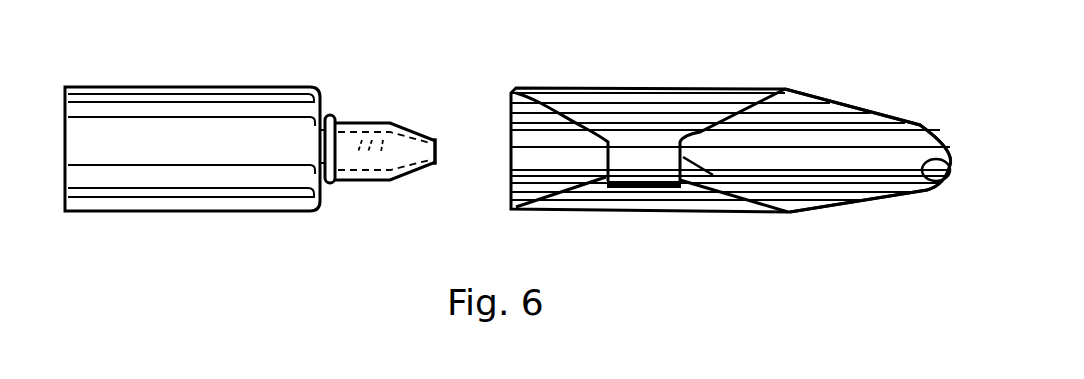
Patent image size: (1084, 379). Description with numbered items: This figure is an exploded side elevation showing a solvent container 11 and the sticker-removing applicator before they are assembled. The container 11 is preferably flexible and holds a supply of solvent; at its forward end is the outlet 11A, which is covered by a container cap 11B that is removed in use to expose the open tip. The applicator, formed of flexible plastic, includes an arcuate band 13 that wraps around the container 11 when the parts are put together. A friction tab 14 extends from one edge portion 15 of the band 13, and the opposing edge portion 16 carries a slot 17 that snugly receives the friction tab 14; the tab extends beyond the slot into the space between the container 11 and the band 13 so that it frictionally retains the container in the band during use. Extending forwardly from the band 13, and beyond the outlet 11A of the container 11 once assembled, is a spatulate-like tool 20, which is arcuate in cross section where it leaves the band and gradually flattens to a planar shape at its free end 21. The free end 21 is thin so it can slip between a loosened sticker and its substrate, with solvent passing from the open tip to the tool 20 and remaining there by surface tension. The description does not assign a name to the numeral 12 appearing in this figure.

The container 11 is at (195, 130).
The nozzle tip 11A is at (434, 138).
The nozzle 11B is at (407, 177).
The applicator 12 is at (731, 124).
The housing 13 is at (700, 103).
The partition wall 14 is at (668, 159).
The funnel inlet 15 is at (730, 125).
The chamber 16 is at (582, 180).
The seal 17 is at (640, 179).
The applicator tip 20 is at (825, 140).
The opening 21 is at (922, 190).